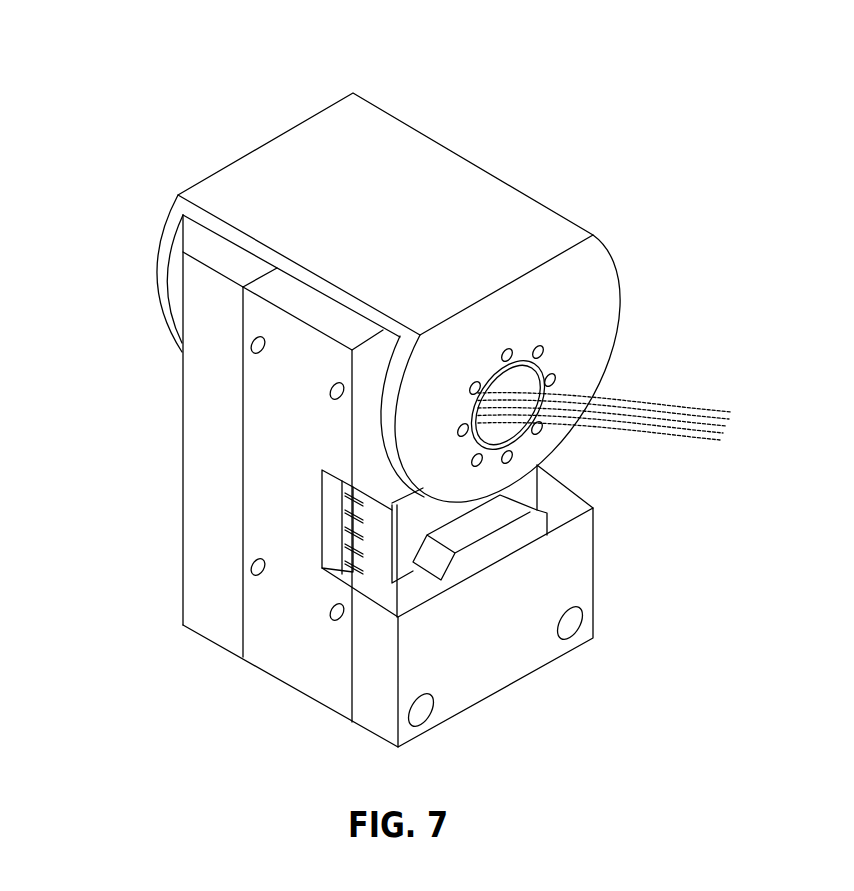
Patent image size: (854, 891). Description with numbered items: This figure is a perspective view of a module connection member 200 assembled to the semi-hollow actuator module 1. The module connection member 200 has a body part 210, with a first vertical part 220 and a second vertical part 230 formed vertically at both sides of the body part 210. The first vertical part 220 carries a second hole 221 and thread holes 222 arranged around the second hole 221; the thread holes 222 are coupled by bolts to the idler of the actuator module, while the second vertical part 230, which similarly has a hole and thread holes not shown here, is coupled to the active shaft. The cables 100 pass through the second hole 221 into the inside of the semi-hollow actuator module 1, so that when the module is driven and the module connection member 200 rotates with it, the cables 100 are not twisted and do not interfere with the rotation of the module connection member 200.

The semi-hollow actuator module 1 is at (610, 543).
The cables 100 is at (672, 408).
The module connection member 200 is at (466, 106).
The body part 210 is at (393, 138).
The first vertical part 220 is at (578, 278).
The second hole 221 is at (500, 432).
The thread holes 222 is at (460, 432).
The second vertical part 230 is at (165, 252).